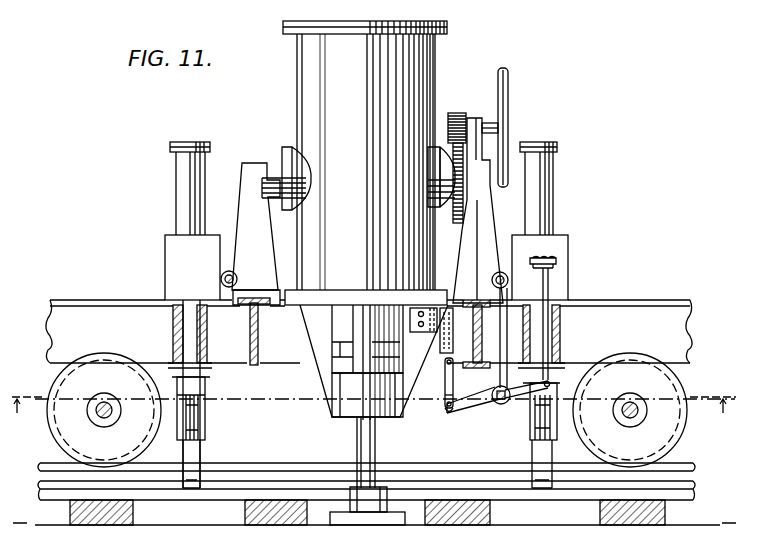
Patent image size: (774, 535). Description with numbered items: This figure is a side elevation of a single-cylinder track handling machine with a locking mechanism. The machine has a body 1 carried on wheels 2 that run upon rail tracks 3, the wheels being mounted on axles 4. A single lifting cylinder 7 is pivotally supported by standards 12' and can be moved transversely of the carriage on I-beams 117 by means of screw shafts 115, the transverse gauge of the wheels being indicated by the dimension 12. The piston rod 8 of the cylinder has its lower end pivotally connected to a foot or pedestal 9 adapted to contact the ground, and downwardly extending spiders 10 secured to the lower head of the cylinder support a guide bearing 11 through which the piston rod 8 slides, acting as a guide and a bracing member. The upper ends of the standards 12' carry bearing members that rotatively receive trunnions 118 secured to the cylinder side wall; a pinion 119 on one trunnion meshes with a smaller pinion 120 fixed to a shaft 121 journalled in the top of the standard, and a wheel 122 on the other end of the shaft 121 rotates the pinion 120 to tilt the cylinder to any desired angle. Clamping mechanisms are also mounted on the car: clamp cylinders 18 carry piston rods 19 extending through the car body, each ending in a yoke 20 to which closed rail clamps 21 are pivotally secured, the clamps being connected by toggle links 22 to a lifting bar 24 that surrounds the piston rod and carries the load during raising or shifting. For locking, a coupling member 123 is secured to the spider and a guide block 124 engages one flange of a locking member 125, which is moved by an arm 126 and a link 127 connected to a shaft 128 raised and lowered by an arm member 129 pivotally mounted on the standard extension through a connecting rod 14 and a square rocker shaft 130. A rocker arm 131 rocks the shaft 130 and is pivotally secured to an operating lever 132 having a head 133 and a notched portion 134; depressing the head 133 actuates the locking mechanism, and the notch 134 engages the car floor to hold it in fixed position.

The body 1 is at (54, 318).
The wheels 2 is at (63, 385).
The rail tracks 3 is at (303, 464).
The axles 4 is at (100, 410).
The cylinder 7 is at (300, 110).
The piston rod 8 is at (358, 445).
The foot or pedestal 9 is at (330, 516).
The spiders 10 is at (318, 331).
The guide bearing 11 is at (345, 398).
The wheel gauge dimension 12 is at (372, 415).
The standards 12' is at (368, 211).
The connecting rod 14 is at (500, 364).
The clamp cylinders 18 is at (182, 205).
The piston rod 19 is at (205, 405).
The yoke 20 is at (205, 431).
The rail clamps 21 is at (198, 455).
The toggle links 22 is at (172, 378).
The lifting bar 24 is at (190, 345).
The screw shafts 115 is at (236, 278).
The I-beams 117 is at (258, 340).
The trunnions 118 is at (443, 150).
The pinion 119 is at (459, 222).
The pinion 120 is at (462, 114).
The shaft 121 is at (490, 120).
The wheel 122 is at (507, 88).
The coupling member 123 is at (425, 332).
The guide block 124 is at (447, 305).
The locking member 125 is at (442, 360).
The arm 126 is at (452, 370).
The link 127 is at (445, 392).
The shaft 128 is at (447, 416).
The arm member 129 is at (474, 415).
The rocker shaft 130 is at (504, 405).
The rocker arm 131 is at (520, 428).
The operating lever 132 is at (556, 340).
The head 133 is at (557, 259).
The notched portion 134 is at (546, 280).